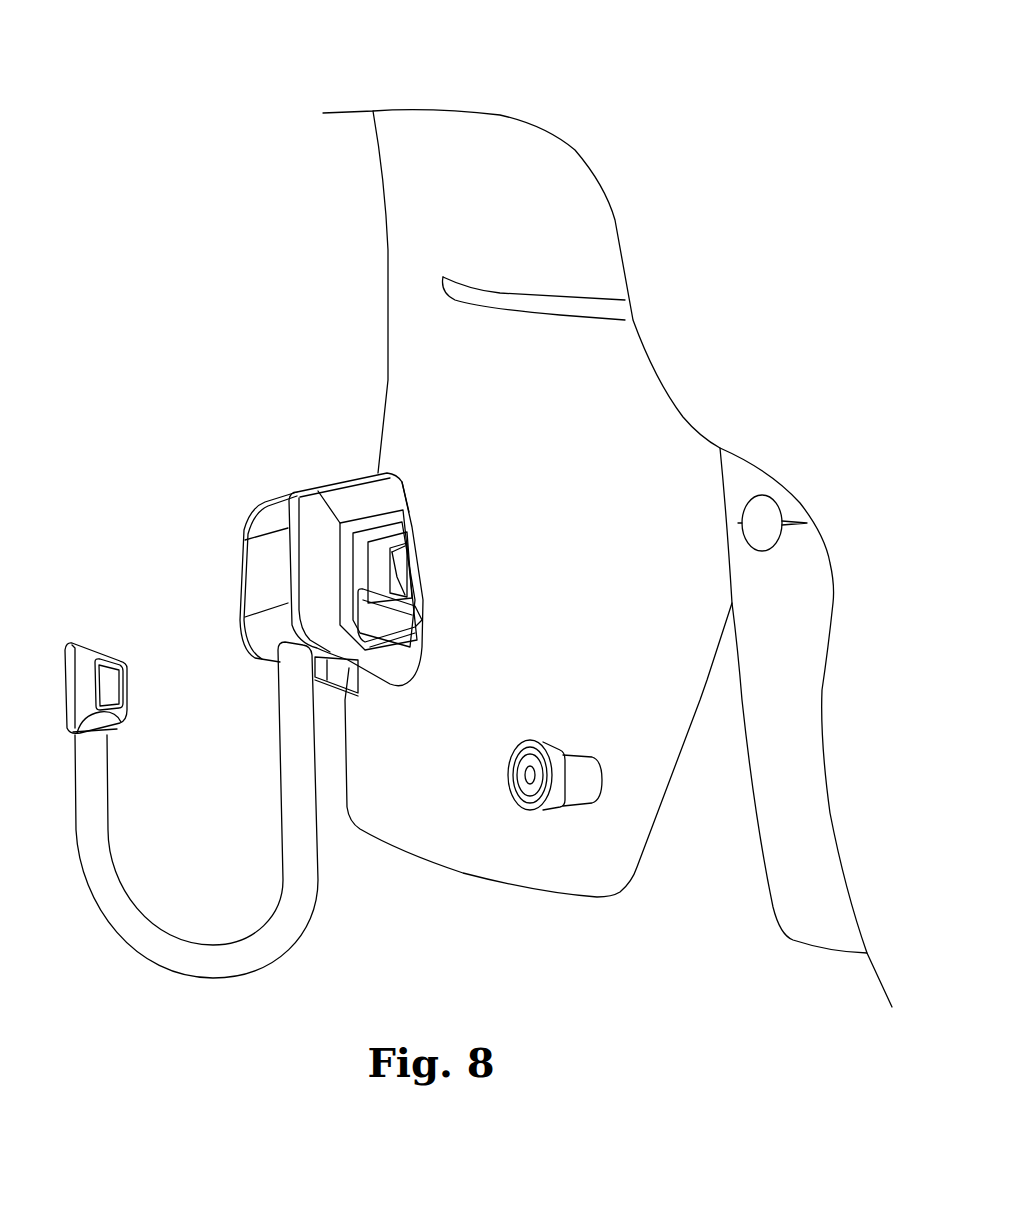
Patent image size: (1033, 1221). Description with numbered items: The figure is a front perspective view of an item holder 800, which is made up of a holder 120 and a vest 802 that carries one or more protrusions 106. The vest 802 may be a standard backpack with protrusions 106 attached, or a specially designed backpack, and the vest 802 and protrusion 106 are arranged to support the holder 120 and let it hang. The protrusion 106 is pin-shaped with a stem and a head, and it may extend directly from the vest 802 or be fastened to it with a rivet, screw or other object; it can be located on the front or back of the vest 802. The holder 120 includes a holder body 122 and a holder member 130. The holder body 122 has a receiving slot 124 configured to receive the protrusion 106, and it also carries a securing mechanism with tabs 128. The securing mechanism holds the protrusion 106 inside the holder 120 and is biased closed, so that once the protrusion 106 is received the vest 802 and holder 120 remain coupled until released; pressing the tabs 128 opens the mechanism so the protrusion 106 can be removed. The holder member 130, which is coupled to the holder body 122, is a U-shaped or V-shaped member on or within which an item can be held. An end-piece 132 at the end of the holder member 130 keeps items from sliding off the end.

The item holder 800 is at (148, 38).
The vest 802 is at (407, 315).
The protrusion 106 is at (527, 808).
The holder 120 is at (138, 520).
The holder body 122 is at (310, 487).
The receiving slot 124 is at (373, 690).
The tabs 128 is at (400, 620).
The holder member 130 is at (100, 905).
The end-piece 132 is at (83, 642).